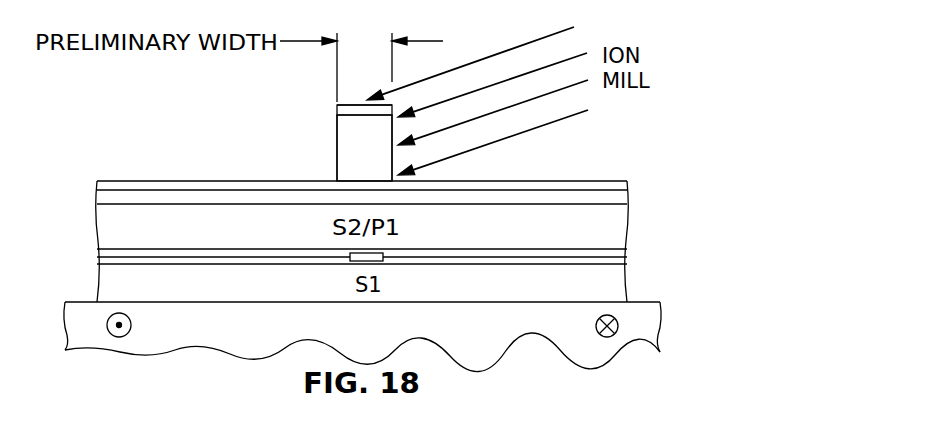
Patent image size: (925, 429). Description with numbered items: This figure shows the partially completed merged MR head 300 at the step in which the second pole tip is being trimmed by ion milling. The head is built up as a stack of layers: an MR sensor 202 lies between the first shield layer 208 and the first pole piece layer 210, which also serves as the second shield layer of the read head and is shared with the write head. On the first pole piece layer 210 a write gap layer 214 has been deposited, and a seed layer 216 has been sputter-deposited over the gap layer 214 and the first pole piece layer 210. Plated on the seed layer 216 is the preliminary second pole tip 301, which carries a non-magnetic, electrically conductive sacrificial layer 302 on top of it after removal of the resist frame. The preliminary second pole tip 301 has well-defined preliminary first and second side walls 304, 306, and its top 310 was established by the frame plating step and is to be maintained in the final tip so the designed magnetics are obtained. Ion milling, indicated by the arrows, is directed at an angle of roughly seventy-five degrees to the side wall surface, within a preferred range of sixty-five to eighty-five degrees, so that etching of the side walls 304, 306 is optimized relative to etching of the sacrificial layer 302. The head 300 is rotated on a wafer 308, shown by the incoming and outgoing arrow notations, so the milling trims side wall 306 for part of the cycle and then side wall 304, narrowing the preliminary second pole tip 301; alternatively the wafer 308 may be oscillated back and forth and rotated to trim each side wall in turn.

The partially completed merged MR head 300 is at (607, 168).
The seed layer 216 is at (628, 186).
The gap layer 214 is at (628, 199).
The first pole piece layer 210 is at (627, 229).
The first shield layer 208 is at (615, 291).
The MR sensor 202 is at (353, 265).
The wafer 308 is at (552, 338).
The preliminary second pole tip 301 is at (342, 130).
The top of the preliminary second pole tip 310 is at (348, 109).
The sacrificial layer 302 is at (355, 105).
The preliminary first side wall 304 is at (337, 167).
The preliminary second side wall 306 is at (398, 157).